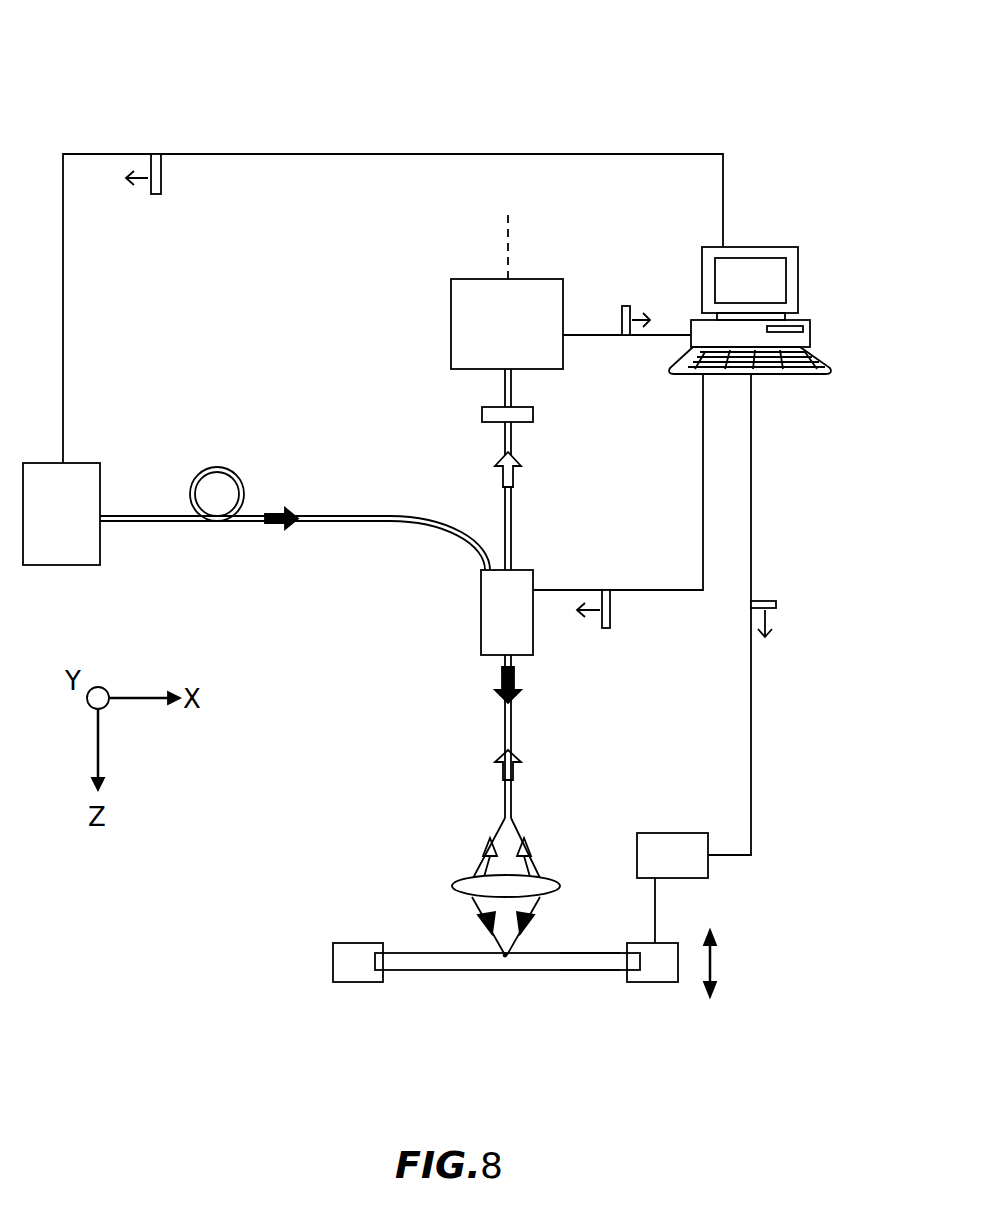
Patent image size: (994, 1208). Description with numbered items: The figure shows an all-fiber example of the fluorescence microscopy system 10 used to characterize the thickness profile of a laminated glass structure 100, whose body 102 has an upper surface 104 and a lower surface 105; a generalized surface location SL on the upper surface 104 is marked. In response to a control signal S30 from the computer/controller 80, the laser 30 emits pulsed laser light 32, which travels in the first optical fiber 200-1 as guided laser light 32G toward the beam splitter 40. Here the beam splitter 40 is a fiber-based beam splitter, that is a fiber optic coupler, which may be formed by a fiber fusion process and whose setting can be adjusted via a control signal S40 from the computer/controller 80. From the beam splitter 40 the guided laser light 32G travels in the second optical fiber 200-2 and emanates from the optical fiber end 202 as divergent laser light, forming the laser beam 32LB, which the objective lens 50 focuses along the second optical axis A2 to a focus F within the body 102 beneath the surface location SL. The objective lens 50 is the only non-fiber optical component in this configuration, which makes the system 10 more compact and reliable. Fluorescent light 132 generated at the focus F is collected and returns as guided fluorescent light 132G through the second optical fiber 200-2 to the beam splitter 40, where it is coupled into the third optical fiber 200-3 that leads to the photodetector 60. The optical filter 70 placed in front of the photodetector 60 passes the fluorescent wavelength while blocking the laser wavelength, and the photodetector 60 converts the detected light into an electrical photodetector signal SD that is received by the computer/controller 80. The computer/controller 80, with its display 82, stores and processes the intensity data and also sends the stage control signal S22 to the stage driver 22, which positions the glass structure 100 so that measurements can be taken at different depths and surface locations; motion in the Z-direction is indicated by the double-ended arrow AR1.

The fluorescence microscopy system 10 is at (103, 55).
The laser 30 is at (78, 532).
The beam splitter 40 is at (524, 627).
The photodetector 60 is at (522, 341).
The optical filter 70 is at (535, 417).
The computer/controller 80 is at (803, 281).
The display 82 is at (760, 268).
The stage driver 22 is at (688, 871).
The objective lens 50 is at (452, 881).
The laminated glass structure 100 is at (396, 938).
The body 102 is at (548, 968).
The upper surface 104 is at (596, 948).
The lower surface 105 is at (596, 950).
The fluorescent light 132 is at (527, 847).
The guided fluorescent light 132G is at (515, 468).
The first optical fiber 200-1 is at (150, 524).
The second optical fiber 200-2 is at (505, 727).
The third optical fiber 200-3 is at (505, 443).
The optical fiber end 202 is at (331, 513).
The laser light 32 is at (364, 612).
The guided laser light 32G is at (275, 525).
The laser beam 32LB is at (532, 927).
The laser control signal S30 is at (162, 188).
The beam splitter control signal S40 is at (612, 626).
The stage control signal S22 is at (772, 601).
The photodetector signal SD is at (628, 306).
The second optical axis A2 is at (508, 255).
The focus F is at (505, 960).
The double-ended arrow AR1 is at (713, 994).
The surface location SL is at (500, 955).